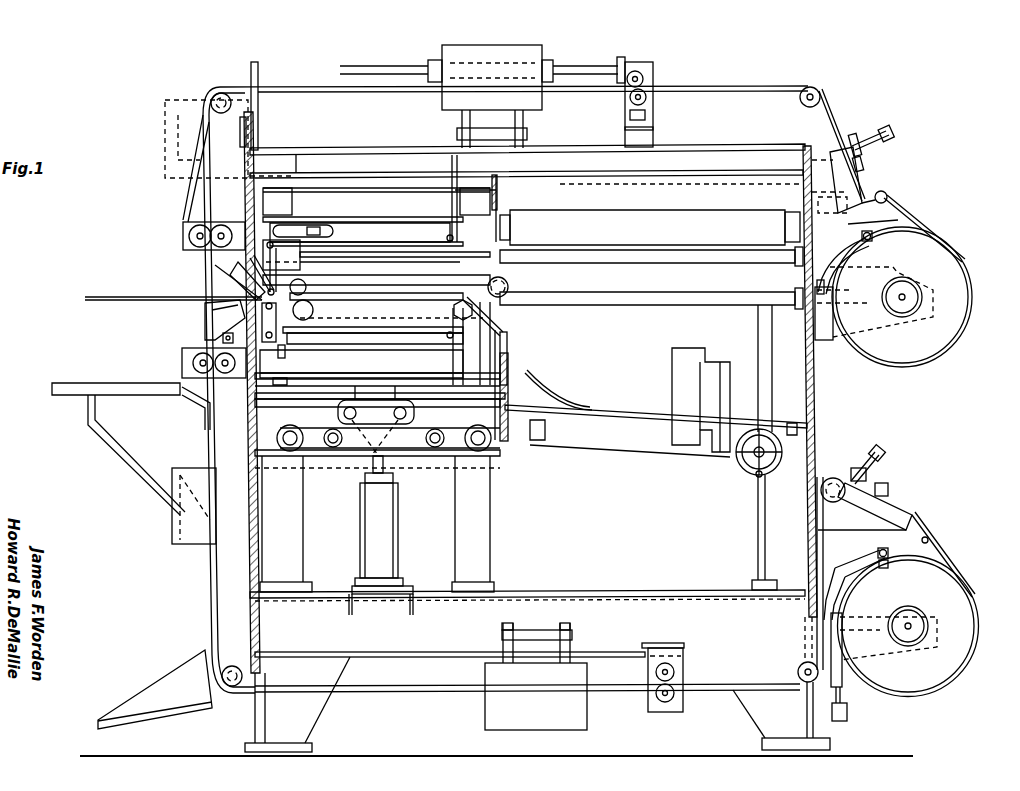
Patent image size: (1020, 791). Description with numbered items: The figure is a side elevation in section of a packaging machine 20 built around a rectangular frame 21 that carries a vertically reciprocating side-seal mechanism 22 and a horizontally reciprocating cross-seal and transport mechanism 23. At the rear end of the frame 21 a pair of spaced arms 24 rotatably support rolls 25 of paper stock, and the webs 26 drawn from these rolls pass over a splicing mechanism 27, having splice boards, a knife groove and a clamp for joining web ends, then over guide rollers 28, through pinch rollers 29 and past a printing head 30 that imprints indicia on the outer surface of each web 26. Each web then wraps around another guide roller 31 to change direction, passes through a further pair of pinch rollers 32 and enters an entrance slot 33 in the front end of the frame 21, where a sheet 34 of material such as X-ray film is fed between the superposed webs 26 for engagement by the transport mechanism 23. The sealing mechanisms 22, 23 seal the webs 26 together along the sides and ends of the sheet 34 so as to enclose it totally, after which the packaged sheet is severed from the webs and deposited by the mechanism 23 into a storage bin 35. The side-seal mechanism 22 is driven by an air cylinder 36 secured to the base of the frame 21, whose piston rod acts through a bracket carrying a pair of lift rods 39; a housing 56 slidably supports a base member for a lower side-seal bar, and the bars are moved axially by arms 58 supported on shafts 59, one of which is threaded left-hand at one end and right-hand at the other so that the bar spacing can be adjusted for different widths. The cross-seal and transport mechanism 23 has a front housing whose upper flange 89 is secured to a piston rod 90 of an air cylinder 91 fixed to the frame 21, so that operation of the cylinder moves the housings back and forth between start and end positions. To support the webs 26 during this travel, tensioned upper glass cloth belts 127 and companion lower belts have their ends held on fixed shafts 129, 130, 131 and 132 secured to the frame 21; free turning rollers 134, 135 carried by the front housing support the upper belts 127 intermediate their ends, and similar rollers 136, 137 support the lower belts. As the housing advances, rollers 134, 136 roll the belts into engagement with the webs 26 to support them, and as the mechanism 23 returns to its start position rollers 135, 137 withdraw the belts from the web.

The packaging machine 20 is at (135, 233).
The rectangular frame 21 is at (816, 447).
The side-seal mechanism 22 is at (420, 482).
The cross-seal and transport mechanism 23 is at (528, 282).
The spaced arms 24 is at (832, 337).
The rolls of paper stock 25 is at (942, 335).
The webs of paper stock 26 is at (882, 222).
The splicing mechanism 27 is at (880, 184).
The guide rollers 28 is at (812, 88).
The pinch rollers 29 is at (648, 95).
The printing head 30 is at (540, 55).
The guide roller 31 is at (218, 93).
The pinch rollers 32 is at (222, 226).
The entrance slot 33 is at (218, 286).
The sheet 34 is at (106, 300).
The storage bin 35 is at (592, 405).
The air cylinder 36 is at (398, 541).
The lift rods 39 is at (352, 420).
The housing 56 is at (340, 420).
The arms 58 is at (400, 445).
The shafts 59 is at (330, 450).
The flange 89 is at (318, 233).
The piston rod 90 is at (352, 236).
The air cylinder 91 is at (590, 240).
The upper glass cloth belts 127 is at (378, 263).
The fixed shaft 129 is at (258, 285).
The fixed shaft 130 is at (450, 236).
The fixed shaft 131 is at (240, 305).
The fixed shaft 132 is at (505, 333).
The free turning roller 134 is at (258, 297).
The free turning roller 135 is at (290, 240).
The free turning roller 136 is at (250, 312).
The free turning roller 137 is at (262, 320).